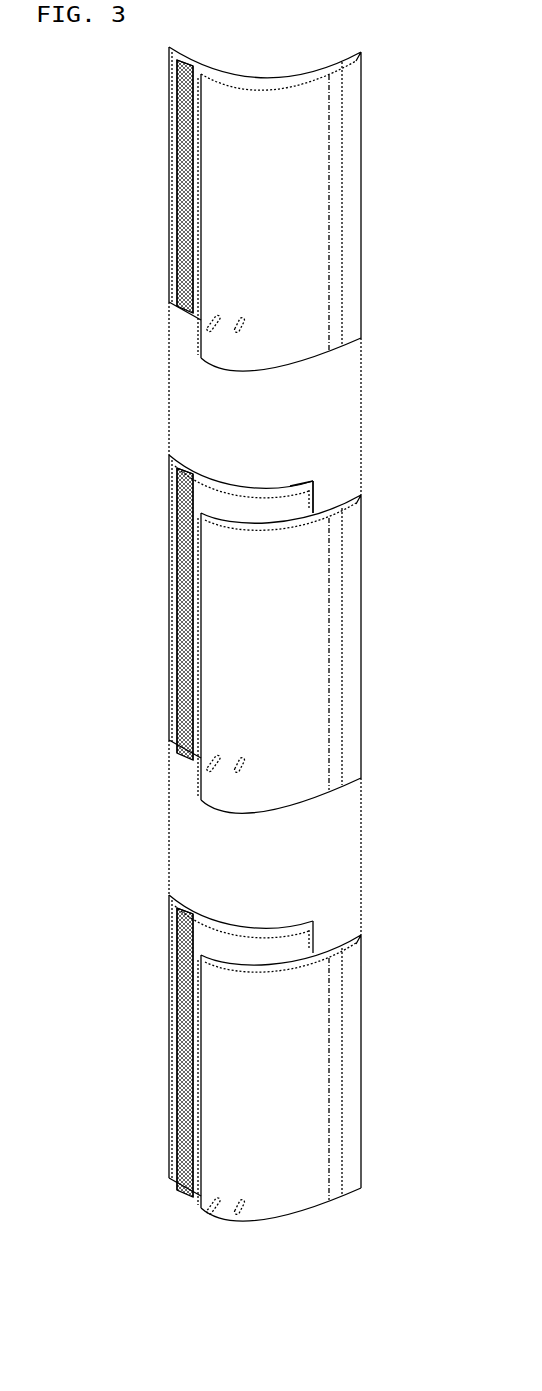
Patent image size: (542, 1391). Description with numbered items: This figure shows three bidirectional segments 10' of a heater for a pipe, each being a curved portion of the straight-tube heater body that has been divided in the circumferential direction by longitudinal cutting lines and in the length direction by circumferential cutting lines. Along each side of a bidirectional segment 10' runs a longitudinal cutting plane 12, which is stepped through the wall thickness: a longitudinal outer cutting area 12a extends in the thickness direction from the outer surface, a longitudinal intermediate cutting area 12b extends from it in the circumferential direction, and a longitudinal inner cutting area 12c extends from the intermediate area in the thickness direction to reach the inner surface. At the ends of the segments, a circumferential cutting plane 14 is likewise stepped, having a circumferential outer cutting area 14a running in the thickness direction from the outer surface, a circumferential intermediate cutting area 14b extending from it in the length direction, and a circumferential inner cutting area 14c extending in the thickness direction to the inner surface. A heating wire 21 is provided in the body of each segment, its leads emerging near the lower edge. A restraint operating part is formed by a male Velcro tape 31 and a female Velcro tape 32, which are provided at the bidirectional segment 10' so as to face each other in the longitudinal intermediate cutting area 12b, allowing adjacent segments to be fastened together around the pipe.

The bidirectional segment 10' is at (297, 634).
The longitudinal cutting plane 12 is at (93, 103).
The longitudinal outer cutting area 12a is at (201, 158).
The longitudinal intermediate cutting area 12b is at (177, 131).
The longitudinal inner cutting area 12c is at (169, 96).
The circumferential cutting plane 14 is at (412, 385).
The circumferential outer cutting area 14a is at (290, 520).
The circumferential intermediate cutting area 14b is at (298, 487).
The circumferential inner cutting area 14c is at (272, 480).
The heating wire 21 is at (209, 334).
The male Velcro tape 31 is at (177, 228).
The female Velcro tape 32 is at (338, 221).